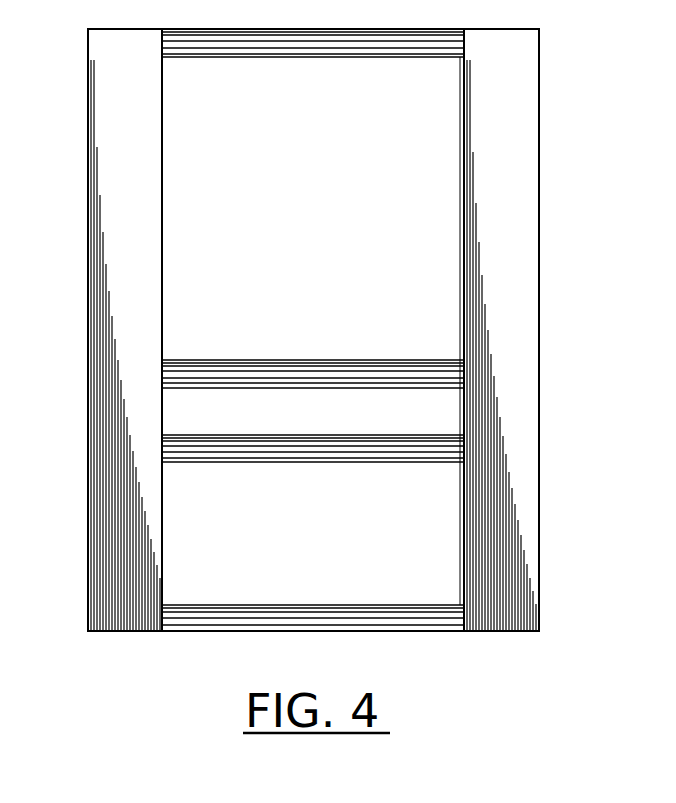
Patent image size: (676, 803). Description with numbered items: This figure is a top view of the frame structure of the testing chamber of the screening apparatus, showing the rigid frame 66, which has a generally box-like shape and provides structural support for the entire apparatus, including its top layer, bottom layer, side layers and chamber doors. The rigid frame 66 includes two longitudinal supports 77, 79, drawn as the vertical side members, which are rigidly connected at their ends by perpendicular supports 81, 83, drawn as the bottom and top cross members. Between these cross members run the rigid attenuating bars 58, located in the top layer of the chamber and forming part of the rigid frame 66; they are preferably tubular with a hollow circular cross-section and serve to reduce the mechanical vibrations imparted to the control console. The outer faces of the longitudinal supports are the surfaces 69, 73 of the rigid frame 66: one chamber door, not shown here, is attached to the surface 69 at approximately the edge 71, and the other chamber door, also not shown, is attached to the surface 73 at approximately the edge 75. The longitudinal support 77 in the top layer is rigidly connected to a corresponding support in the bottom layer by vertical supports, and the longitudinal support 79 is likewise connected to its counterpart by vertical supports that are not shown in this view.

The rigid frame 66 is at (540, 408).
The surface 69 is at (540, 112).
The surface 73 is at (87, 98).
The perpendicular support 83 is at (376, 29).
The rigid attenuating bars 58 is at (337, 360).
The perpendicular support 81 is at (392, 631).
The edge 75 is at (89, 631).
The longitudinal support 79 is at (147, 631).
The longitudinal support 77 is at (480, 631).
The edge 71 is at (541, 631).